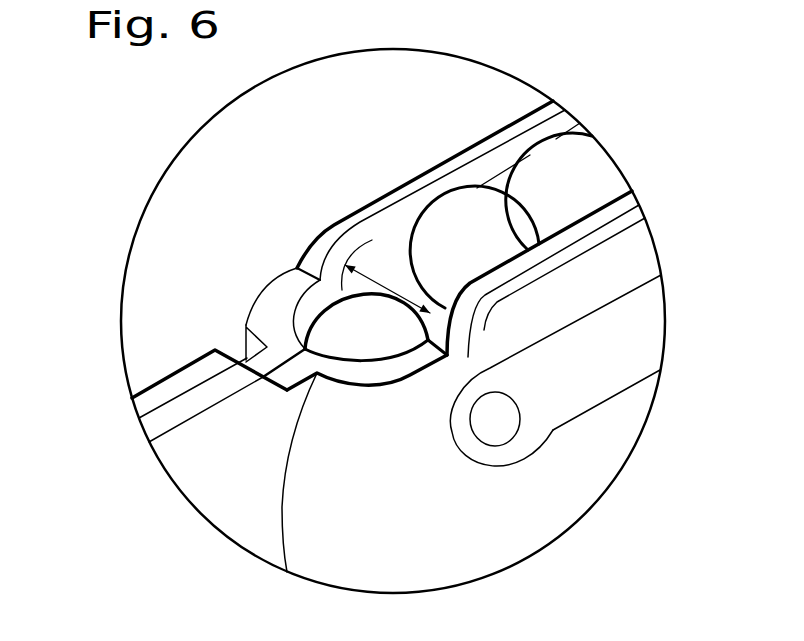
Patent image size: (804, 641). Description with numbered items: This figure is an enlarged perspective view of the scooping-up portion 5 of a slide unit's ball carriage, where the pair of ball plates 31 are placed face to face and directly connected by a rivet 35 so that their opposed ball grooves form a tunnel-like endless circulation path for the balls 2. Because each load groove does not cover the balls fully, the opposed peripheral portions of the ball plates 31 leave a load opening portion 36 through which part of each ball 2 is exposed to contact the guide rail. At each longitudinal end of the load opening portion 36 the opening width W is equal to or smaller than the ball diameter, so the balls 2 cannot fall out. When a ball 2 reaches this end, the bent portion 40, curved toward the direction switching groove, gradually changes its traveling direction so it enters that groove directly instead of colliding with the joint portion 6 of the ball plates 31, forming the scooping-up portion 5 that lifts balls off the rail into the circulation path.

The ball 2 is at (460, 207).
The scooping-up portion 5 is at (314, 237).
The joint portion 6 is at (318, 341).
The ball plate 31 is at (167, 387).
The rivet 35 is at (521, 418).
The load opening portion 36 is at (393, 287).
The bent portion 40 is at (507, 153).
The opening width W is at (335, 230).